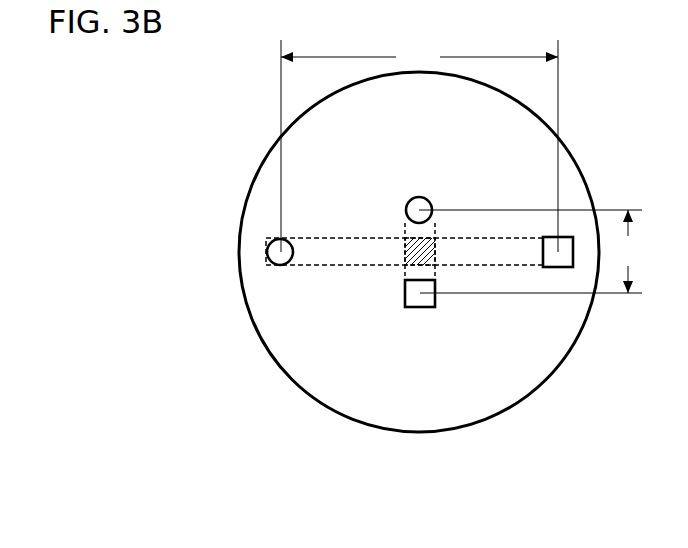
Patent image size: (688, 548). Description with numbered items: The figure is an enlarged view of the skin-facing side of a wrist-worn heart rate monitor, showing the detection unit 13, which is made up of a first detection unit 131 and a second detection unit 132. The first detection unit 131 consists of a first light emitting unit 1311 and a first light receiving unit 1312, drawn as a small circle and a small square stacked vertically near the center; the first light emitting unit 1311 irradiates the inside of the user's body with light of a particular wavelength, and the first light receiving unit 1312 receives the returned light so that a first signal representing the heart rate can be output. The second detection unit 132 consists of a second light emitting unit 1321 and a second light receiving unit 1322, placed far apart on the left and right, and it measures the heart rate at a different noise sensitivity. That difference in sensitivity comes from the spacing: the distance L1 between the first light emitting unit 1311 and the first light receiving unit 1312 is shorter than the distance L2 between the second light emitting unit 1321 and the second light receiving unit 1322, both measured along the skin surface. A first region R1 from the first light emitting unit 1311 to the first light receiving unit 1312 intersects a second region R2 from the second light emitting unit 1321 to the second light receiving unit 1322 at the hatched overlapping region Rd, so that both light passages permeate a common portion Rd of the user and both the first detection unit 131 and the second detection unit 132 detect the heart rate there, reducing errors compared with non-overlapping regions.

The detection unit 13 is at (247, 384).
The first detection unit 131 is at (503, 152).
The first light emitting unit 1311 is at (419, 198).
The first light receiving unit 1312 is at (428, 290).
The second detection unit 132 is at (528, 468).
The second light emitting unit 1321 is at (282, 258).
The second light receiving unit 1322 is at (563, 255).
The first region R1 is at (418, 234).
The second region R2 is at (316, 248).
The overlapping region Rd is at (406, 260).
The distance between first light emitting unit and first light receiving unit L1 is at (530, 251).
The distance between second light emitting unit and second light receiving unit L2 is at (419, 146).